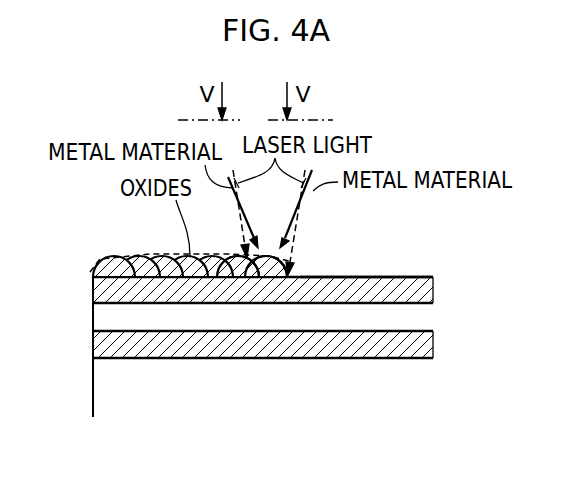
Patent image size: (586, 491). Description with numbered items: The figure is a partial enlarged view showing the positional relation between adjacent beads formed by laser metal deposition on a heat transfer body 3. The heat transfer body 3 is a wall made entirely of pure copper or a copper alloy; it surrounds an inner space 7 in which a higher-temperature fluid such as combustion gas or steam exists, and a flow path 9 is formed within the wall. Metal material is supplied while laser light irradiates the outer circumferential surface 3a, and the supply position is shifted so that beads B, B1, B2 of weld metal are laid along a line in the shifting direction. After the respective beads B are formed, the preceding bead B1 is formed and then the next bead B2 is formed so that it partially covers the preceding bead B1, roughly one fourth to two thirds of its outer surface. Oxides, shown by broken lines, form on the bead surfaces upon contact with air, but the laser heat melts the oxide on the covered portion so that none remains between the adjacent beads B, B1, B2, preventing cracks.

The heat transfer body 3 is at (102, 291).
The outer circumferential surface 3a is at (372, 277).
The inner space 7 is at (120, 393).
The flow path 9 is at (248, 317).
The bead B is at (108, 259).
The preceding bead B1 is at (248, 258).
The next bead B2 is at (287, 265).